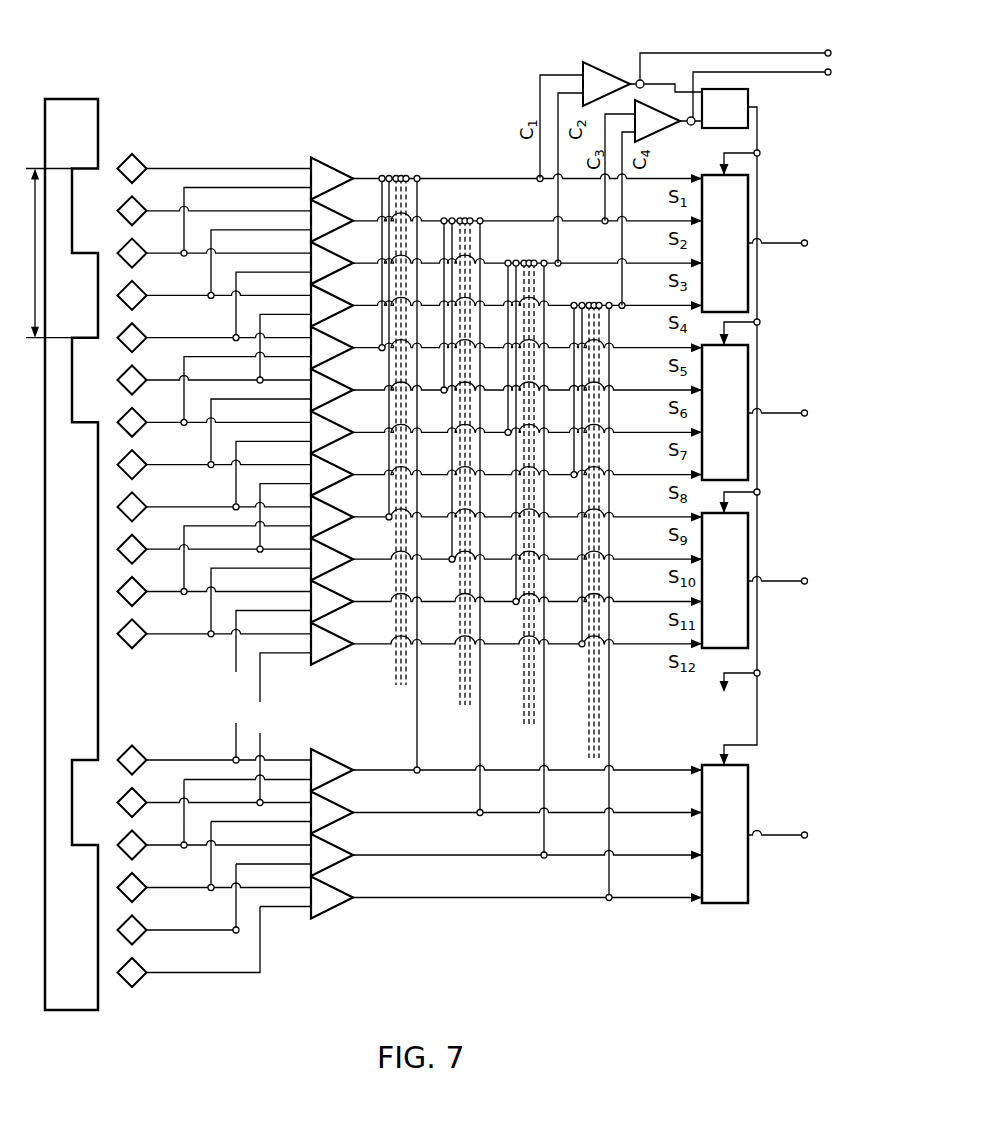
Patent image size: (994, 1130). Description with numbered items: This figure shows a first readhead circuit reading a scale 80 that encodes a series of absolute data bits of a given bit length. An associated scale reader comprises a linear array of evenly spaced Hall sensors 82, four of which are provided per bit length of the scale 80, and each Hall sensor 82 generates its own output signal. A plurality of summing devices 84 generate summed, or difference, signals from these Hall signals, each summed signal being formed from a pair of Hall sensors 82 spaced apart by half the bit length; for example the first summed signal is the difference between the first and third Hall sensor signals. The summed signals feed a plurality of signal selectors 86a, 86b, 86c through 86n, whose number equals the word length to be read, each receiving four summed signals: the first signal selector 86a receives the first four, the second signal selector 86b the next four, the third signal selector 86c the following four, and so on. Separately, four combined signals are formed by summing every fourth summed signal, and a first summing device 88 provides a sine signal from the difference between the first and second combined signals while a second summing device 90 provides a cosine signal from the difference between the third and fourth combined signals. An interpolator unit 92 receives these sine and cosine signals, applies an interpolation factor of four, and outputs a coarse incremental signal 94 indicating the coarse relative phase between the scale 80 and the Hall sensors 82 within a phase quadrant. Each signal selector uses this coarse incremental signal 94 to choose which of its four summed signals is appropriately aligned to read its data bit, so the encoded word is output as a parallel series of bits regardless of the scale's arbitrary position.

The scale 80 is at (99, 108).
The Hall sensors 82 is at (97, 873).
The summing devices 84 is at (311, 390).
The first signal selector 86a is at (772, 243).
The second signal selector 86b is at (772, 412).
The third signal selector 86c is at (772, 580).
The signal selector 86n is at (772, 834).
The first summing device 88 is at (600, 64).
The second summing device 90 is at (657, 117).
The interpolator unit 92 is at (750, 96).
The coarse incremental signal 94 is at (759, 135).